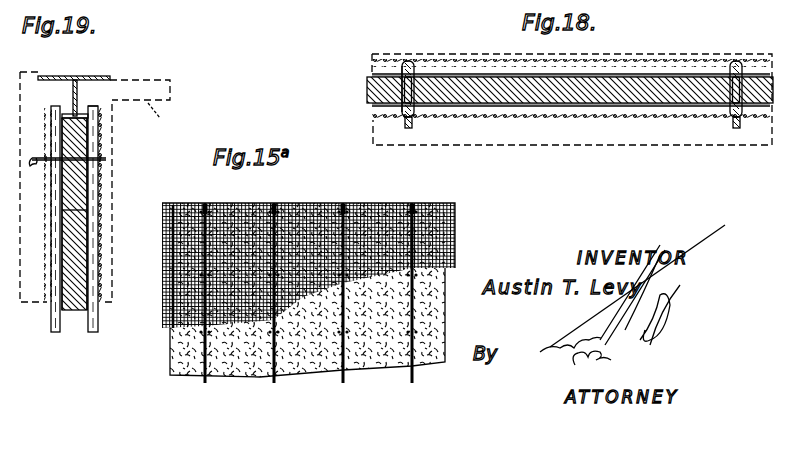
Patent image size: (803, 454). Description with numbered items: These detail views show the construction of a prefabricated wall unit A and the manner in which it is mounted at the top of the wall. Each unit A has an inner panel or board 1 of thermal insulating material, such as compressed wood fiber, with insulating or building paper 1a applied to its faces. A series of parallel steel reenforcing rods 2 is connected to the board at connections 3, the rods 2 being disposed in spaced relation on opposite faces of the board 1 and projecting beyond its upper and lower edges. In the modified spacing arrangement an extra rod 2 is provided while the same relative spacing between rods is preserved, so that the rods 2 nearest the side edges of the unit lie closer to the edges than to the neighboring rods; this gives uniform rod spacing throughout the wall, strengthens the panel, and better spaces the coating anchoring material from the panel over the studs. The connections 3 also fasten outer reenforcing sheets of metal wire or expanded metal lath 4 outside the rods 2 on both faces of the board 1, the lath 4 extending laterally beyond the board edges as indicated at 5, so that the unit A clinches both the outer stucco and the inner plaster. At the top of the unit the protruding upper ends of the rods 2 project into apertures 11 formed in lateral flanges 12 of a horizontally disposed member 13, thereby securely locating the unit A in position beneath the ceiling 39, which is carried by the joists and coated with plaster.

In FIG. 19, the inner panel or board 1 is at (78, 183).
In FIG. 18, the inner panel or board 1 is at (473, 78).
In FIG. 19, the insulating or building paper 1a is at (85, 214).
In FIG. 18, the insulating or building paper 1a is at (500, 76).
In FIG. 19, the reenforcing rods 2 is at (98, 320).
In FIG. 18, the reenforcing rods 2 is at (410, 64).
In FIG. 15A, the reenforcing rods 2 is at (412, 356).
In FIG. 19, the connections 3 is at (100, 146).
In FIG. 18, the connections 3 is at (405, 62).
In FIG. 15A, the connections 3 is at (352, 297).
In FIG. 19, the reenforcing sheets of metal wire or expanded metal lath 4 is at (103, 243).
In FIG. 18, the reenforcing sheets of metal wire or expanded metal lath 4 is at (461, 62).
In FIG. 15A, the reenforcing sheets of metal wire or expanded metal lath 4 is at (372, 222).
In FIG. 15A, the lateral extension of lath 5 is at (450, 210).
In FIG. 19, the apertures 11 is at (99, 112).
In FIG. 19, the lateral flanges 12 is at (86, 114).
In FIG. 19, the horizontally disposed member 13 is at (80, 78).
In FIG. 19, the ceiling 39 is at (166, 122).
In FIG. 19, the unit A is at (72, 275).
In FIG. 18, the unit A is at (461, 92).
In FIG. 15A, the unit A is at (430, 326).